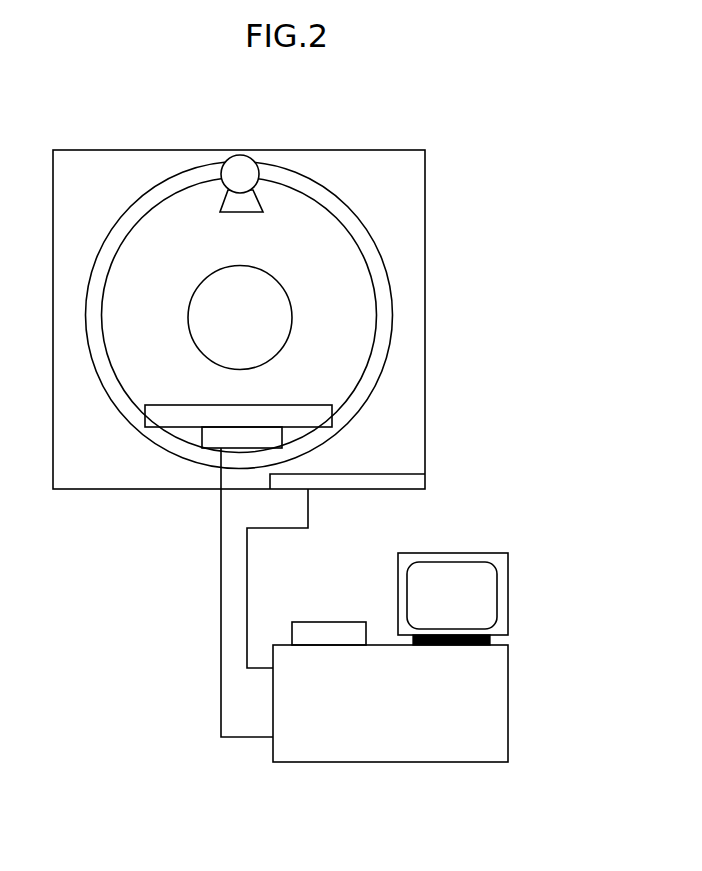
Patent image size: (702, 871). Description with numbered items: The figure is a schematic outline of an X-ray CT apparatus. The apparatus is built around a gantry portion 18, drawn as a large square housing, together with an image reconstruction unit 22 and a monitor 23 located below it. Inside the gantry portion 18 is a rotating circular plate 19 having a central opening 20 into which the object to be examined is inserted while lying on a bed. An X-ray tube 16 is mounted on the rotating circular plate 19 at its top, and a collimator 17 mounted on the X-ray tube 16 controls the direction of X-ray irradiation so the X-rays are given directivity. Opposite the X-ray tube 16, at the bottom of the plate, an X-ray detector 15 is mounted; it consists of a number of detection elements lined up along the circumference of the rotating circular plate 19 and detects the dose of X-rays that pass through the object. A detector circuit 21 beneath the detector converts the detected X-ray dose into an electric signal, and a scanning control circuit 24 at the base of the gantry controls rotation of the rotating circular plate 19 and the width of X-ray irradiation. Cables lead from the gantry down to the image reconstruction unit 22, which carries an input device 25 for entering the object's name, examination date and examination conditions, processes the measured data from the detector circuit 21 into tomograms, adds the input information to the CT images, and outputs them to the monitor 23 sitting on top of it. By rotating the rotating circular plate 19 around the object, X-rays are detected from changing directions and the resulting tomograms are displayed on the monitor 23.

The X-ray detector 15 is at (318, 417).
The X-ray tube 16 is at (243, 170).
The collimator 17 is at (248, 205).
The gantry portion 18 is at (408, 190).
The rotating circular plate 19 is at (343, 315).
The opening 20 is at (258, 299).
The detector circuit 21 is at (248, 443).
The image reconstruction unit 22 is at (458, 713).
The monitor 23 is at (468, 601).
The scanning control circuit 24 is at (388, 483).
The input device 25 is at (328, 635).